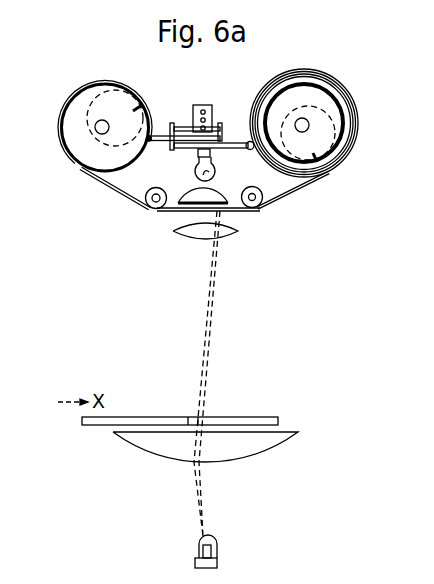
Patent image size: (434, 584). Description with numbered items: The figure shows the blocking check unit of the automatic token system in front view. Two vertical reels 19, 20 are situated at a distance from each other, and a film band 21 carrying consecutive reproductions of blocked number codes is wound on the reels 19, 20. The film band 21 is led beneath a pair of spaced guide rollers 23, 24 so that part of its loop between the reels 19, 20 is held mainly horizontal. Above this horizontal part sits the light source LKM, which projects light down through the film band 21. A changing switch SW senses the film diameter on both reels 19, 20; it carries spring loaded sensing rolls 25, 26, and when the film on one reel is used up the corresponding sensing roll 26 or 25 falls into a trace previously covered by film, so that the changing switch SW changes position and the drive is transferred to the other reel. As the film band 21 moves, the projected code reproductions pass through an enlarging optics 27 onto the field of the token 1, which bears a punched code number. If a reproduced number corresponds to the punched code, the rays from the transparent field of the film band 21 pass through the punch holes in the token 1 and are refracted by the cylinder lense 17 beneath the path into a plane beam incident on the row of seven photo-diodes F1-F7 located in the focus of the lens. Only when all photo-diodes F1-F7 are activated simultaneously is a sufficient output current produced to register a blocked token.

The token 1 is at (248, 417).
The cylinder lense 17 is at (240, 442).
The reel 19 is at (72, 110).
The reel 20 is at (332, 112).
The film band 21 is at (110, 186).
The guide roller 23 is at (150, 210).
The guide roller 24 is at (260, 208).
The spring loaded sensing roll 25 is at (147, 150).
The spring loaded sensing roll 26 is at (249, 141).
The enlarging optics 27 is at (198, 232).
The changing switch SW is at (207, 105).
The light source LKM is at (212, 172).
The photo-diodes F1-F7 is at (213, 552).